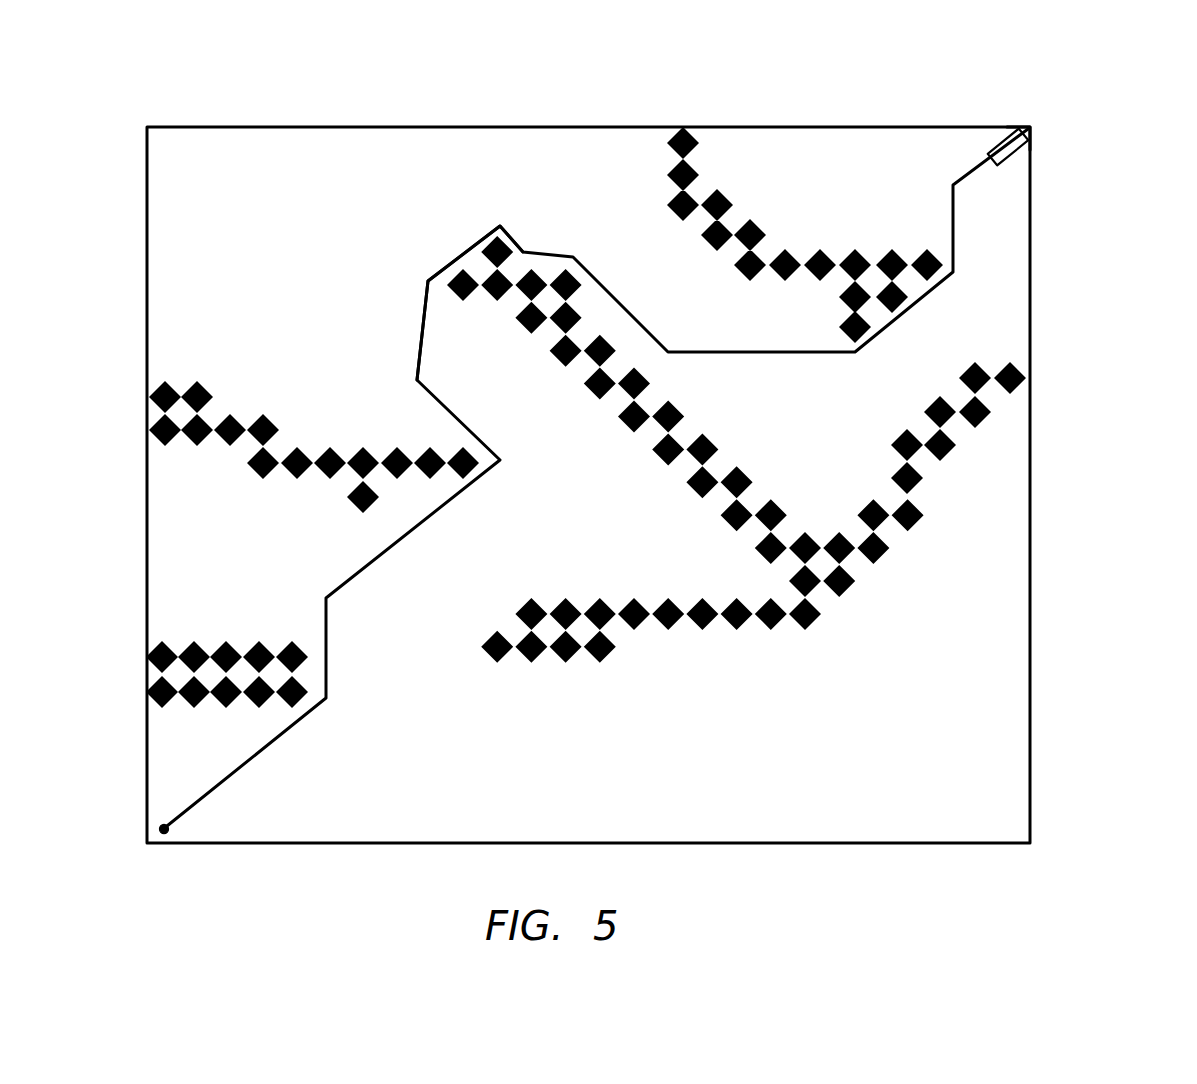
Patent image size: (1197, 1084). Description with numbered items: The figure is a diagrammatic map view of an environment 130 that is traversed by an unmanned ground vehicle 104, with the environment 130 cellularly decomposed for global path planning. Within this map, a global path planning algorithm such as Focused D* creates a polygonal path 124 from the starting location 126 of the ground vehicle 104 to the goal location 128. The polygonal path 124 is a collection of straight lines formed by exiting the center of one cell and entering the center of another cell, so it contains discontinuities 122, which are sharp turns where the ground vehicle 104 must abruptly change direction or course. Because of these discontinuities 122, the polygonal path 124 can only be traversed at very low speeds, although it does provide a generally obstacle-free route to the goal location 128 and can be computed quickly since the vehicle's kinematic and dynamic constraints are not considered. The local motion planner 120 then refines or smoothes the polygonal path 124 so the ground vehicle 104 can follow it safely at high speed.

The unmanned ground vehicle 104 is at (990, 150).
The local motion planner 120 is at (586, 417).
The discontinuities 122 is at (857, 353).
The polygonal path 124 is at (440, 268).
The starting location 126 is at (169, 830).
The goal location 128 is at (1033, 127).
The environment 130 is at (1058, 314).